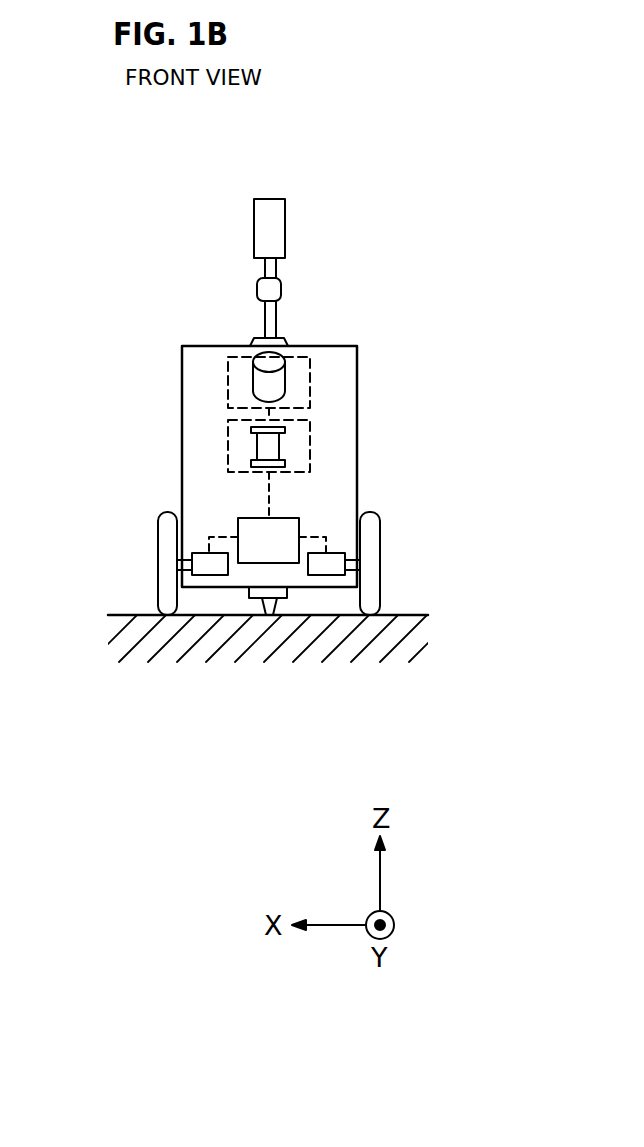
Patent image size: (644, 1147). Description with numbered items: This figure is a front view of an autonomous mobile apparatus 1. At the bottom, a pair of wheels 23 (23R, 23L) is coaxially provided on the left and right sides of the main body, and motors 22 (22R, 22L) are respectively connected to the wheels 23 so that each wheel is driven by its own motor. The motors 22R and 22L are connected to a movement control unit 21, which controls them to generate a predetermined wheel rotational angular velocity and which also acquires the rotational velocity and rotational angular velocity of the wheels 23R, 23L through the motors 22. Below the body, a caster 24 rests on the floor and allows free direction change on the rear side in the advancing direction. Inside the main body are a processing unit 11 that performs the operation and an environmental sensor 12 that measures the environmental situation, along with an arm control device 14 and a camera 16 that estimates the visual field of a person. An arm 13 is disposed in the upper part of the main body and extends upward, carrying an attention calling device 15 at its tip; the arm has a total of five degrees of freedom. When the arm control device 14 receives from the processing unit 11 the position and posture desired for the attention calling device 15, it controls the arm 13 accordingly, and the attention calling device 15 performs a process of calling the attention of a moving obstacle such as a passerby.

The autonomous mobile apparatus 1 is at (365, 160).
The processing unit 11 is at (228, 442).
The environmental sensor 12 is at (279, 445).
The arm 13 is at (273, 313).
The arm control device 14 is at (228, 383).
The attention calling device 15 is at (280, 229).
The camera 16 is at (310, 380).
The movement control unit 21 is at (283, 523).
The motors 22 is at (294, 648).
The right motor 22R is at (208, 575).
The left motor 22L is at (329, 575).
The pair of wheels 23 is at (266, 563).
The right wheel 23R is at (160, 545).
The left wheel 23L is at (373, 546).
The caster 24 is at (270, 615).